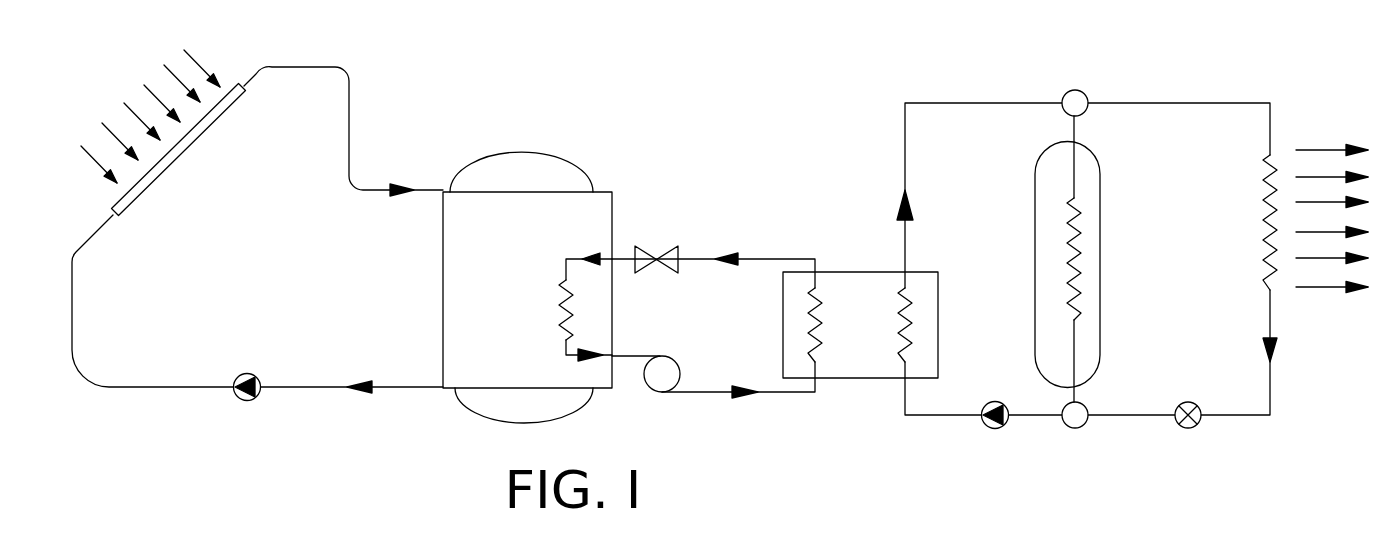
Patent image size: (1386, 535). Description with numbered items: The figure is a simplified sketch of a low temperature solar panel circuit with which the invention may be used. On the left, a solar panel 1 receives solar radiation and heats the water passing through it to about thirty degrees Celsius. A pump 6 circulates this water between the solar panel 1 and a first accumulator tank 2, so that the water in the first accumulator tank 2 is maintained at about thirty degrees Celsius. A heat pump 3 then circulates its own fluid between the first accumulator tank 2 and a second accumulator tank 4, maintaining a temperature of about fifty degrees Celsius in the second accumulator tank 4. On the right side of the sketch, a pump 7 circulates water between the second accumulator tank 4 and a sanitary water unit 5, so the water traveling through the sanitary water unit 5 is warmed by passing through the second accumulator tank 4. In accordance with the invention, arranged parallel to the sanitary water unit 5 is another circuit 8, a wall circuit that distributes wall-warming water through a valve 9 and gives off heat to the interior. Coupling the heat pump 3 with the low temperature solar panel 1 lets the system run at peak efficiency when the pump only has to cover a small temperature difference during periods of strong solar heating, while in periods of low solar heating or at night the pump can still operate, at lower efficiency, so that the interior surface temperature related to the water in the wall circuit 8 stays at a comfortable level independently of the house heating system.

The solar panel 1 is at (143, 188).
The first accumulator tank 2 is at (538, 152).
The heat pump 3 is at (693, 232).
The second accumulator tank 4 is at (877, 272).
The sanitary water unit 5 is at (1035, 240).
The pump 6 is at (243, 400).
The pump 7 is at (992, 430).
The wall circuit 8 is at (1240, 198).
The valve 9 is at (1192, 432).